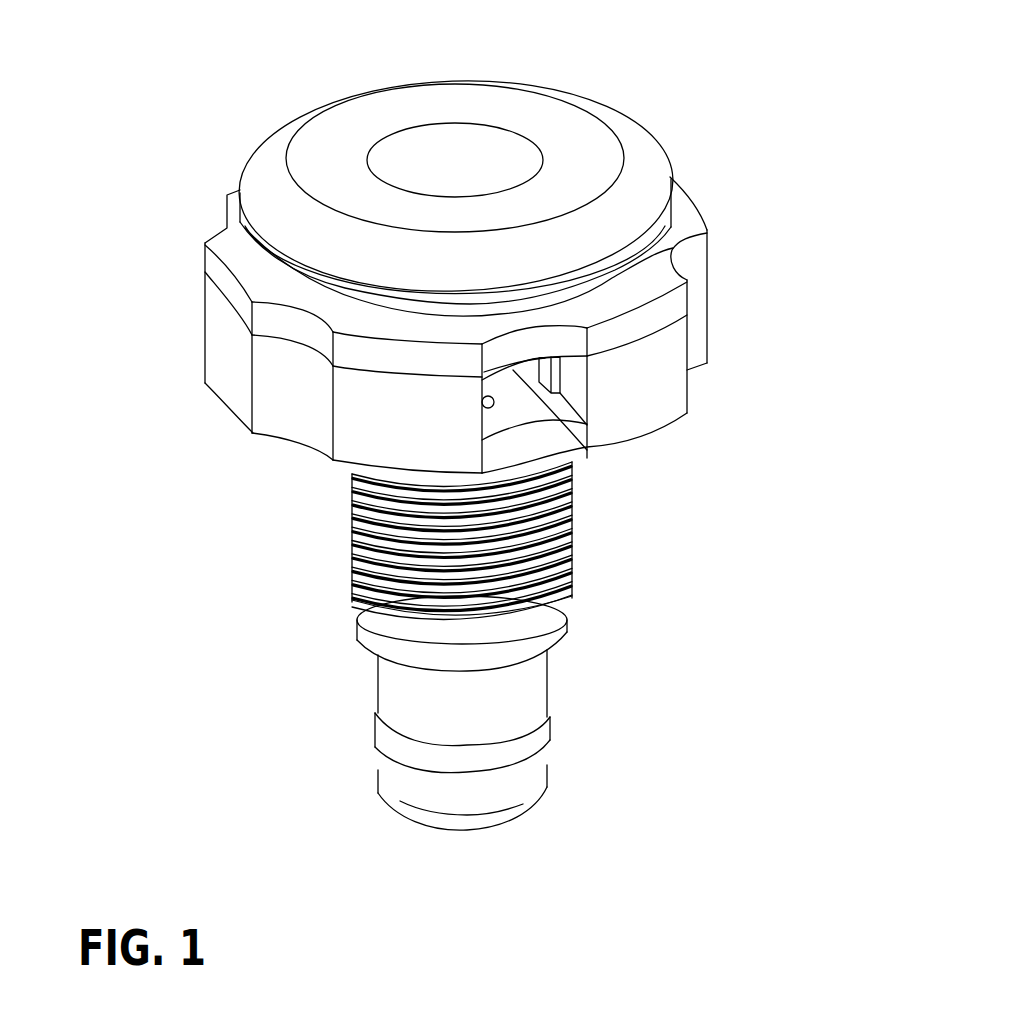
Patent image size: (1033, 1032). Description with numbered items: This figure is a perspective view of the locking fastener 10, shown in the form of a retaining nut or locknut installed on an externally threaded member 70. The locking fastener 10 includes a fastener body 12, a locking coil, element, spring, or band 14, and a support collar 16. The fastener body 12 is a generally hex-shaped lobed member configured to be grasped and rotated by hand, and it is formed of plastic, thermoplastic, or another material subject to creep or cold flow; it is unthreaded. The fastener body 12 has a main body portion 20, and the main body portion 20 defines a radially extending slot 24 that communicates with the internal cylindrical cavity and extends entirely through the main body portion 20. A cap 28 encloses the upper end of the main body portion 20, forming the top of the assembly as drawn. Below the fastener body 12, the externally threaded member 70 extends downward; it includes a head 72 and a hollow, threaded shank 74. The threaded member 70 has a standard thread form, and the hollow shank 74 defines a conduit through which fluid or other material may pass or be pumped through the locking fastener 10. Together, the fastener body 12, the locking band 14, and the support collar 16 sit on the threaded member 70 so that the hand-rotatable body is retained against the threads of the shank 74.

The locking fastener 10 is at (689, 101).
The fastener body 12 is at (709, 290).
The locking band 14 is at (585, 383).
The support collar 16 is at (587, 425).
The main body portion 20 is at (270, 434).
The radially extending slot 24 is at (508, 405).
The cap 28 is at (205, 242).
The externally threaded member 70 is at (574, 549).
The head 72 is at (377, 107).
The threaded shank 74 is at (410, 622).